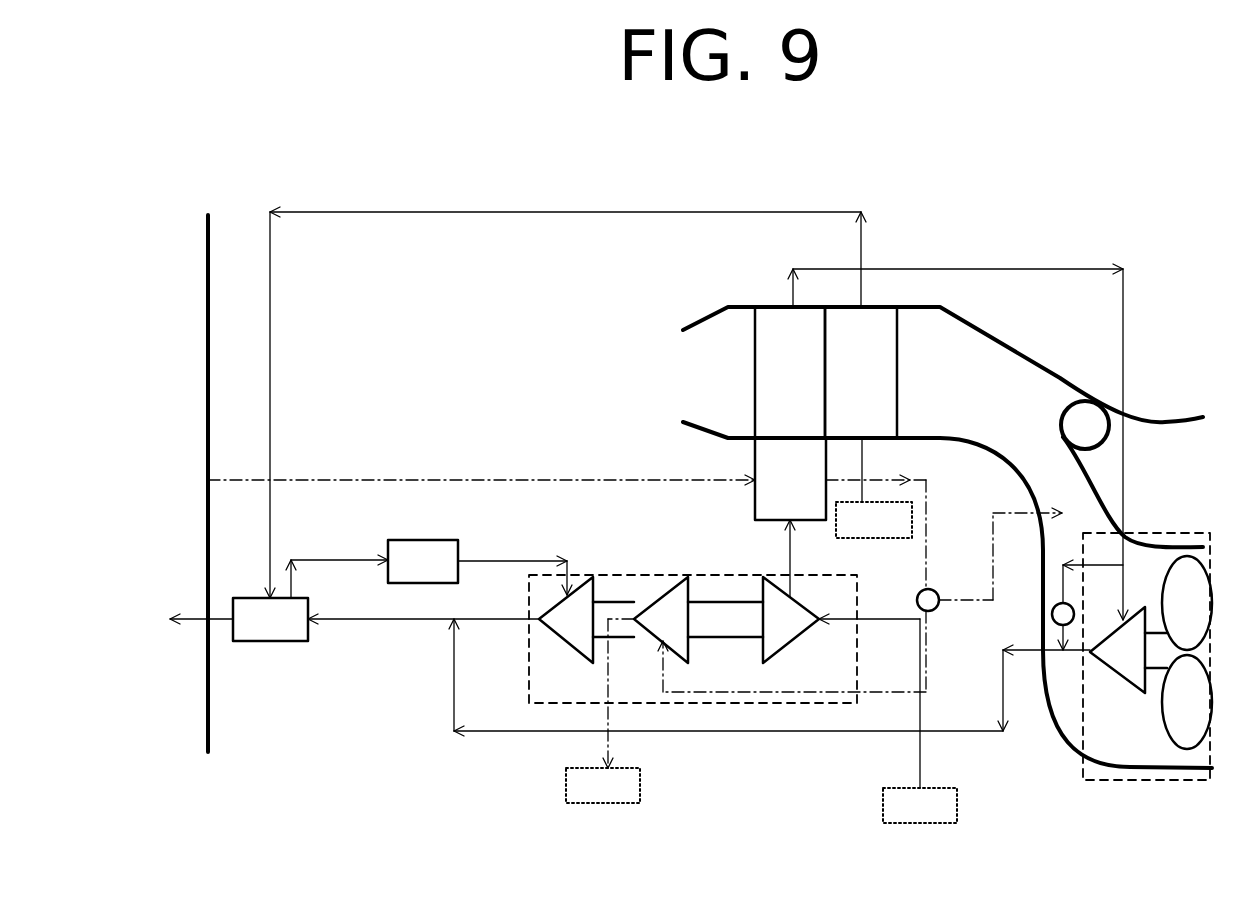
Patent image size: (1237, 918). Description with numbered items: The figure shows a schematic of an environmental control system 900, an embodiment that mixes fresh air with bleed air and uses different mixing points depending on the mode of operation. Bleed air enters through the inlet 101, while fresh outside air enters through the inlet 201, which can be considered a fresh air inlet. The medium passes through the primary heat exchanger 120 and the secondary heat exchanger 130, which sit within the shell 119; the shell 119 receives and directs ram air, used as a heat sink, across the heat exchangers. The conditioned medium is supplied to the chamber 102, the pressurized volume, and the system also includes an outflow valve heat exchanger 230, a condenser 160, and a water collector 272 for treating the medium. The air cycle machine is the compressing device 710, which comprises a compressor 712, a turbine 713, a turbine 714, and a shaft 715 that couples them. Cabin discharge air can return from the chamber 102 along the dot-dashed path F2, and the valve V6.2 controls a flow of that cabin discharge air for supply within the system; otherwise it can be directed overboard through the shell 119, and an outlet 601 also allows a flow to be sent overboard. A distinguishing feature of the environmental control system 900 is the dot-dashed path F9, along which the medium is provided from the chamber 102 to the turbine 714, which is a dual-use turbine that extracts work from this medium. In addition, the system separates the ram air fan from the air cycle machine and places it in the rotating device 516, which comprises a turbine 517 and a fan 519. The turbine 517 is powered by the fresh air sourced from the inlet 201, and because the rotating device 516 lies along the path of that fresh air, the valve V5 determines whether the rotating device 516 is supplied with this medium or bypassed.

The environmental control system 900 is at (1147, 122).
The chamber 102 is at (205, 213).
The shell 119 is at (1050, 368).
The secondary heat exchanger 130 is at (773, 387).
The primary heat exchanger 120 is at (844, 387).
The outflow valve heat exchanger 230 is at (773, 492).
The inlet 101 is at (874, 520).
The medium path F2 is at (423, 480).
The condenser 160 is at (254, 630).
The water collector 272 is at (406, 572).
The compressing device 710 is at (693, 682).
The turbine 713 is at (549, 630).
The turbine 714 is at (644, 630).
The compressor 712 is at (773, 630).
The shaft 715 is at (678, 646).
The outlet 601 is at (603, 711).
The inlet 201 is at (920, 805).
The valve V6.2 is at (923, 590).
The medium path F9 is at (930, 638).
The valve V5 is at (1055, 607).
The rotating device 516 is at (1136, 661).
The turbine 517 is at (1105, 663).
The fan 519 is at (1165, 545).